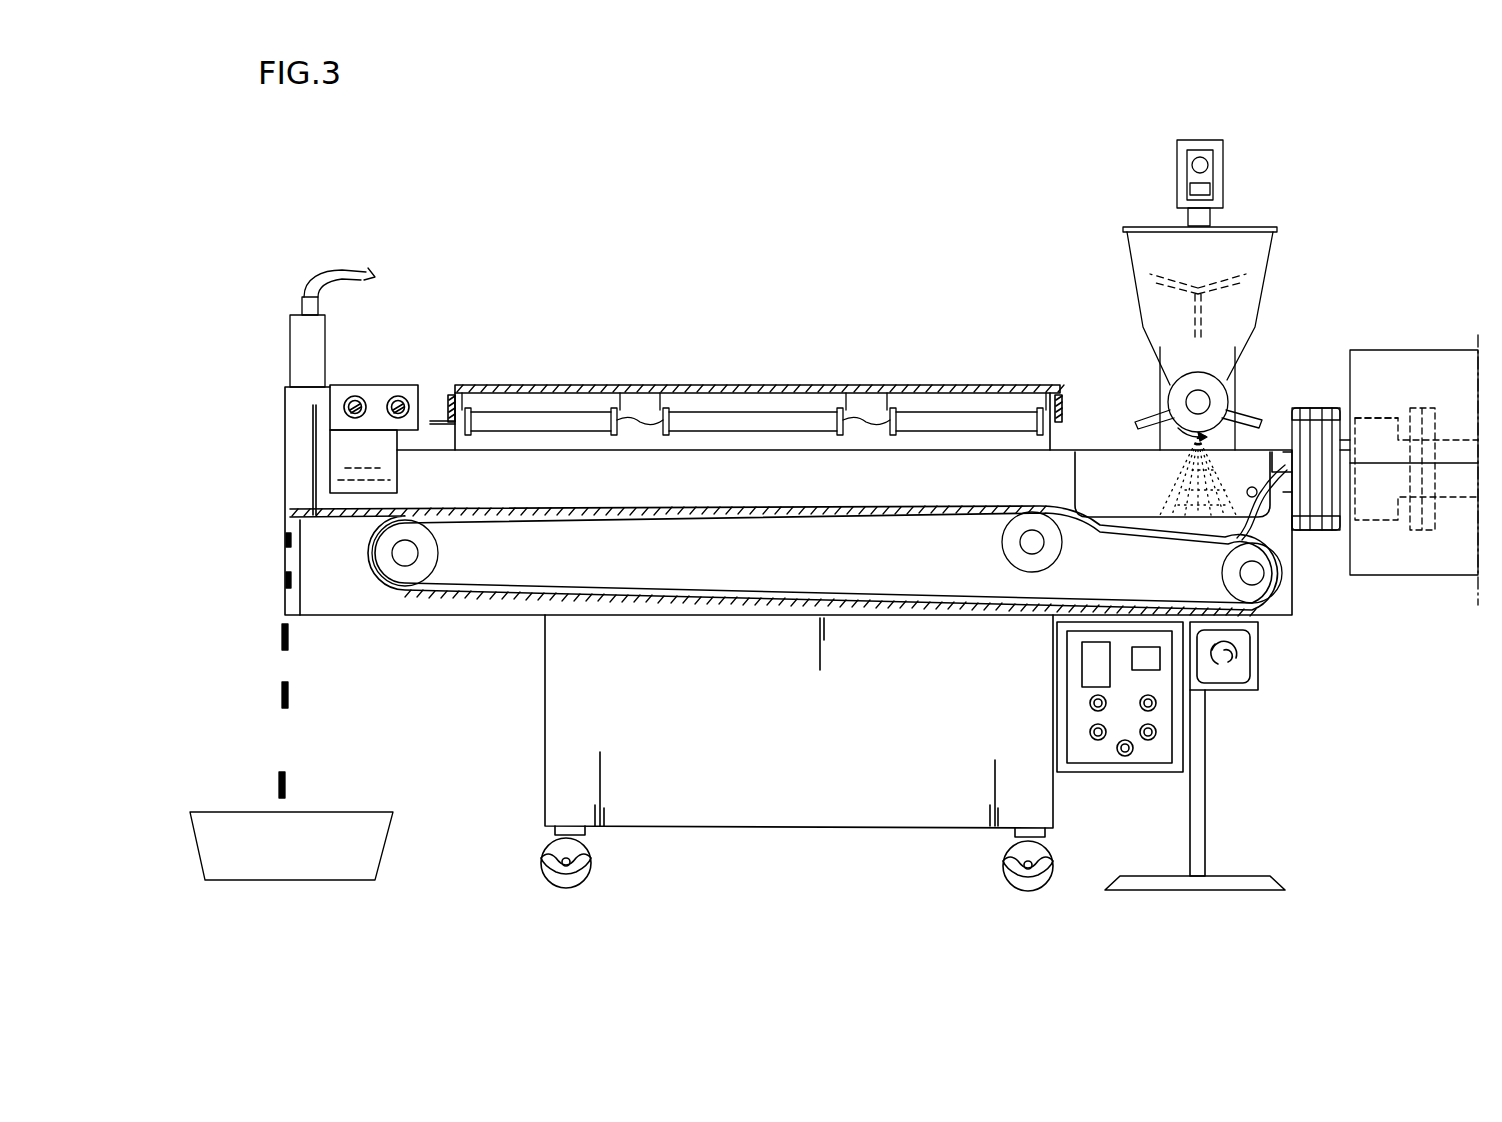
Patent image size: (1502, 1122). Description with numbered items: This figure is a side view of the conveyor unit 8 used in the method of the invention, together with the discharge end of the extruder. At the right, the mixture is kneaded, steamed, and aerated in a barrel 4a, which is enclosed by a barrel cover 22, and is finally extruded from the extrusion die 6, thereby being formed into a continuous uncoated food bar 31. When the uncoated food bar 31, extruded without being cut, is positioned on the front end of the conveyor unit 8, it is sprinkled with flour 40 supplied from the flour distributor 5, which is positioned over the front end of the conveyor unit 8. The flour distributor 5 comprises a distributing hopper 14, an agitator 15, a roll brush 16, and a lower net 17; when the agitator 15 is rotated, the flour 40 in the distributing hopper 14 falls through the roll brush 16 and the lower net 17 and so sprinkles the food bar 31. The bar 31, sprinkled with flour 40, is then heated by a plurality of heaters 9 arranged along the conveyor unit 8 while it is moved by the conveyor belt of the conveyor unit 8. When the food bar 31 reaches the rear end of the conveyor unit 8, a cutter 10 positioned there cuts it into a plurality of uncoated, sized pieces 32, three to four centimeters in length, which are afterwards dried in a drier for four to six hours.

The barrel 4a is at (1383, 520).
The flour distributor 5 is at (1240, 202).
The extrusion die 6 is at (1283, 455).
The conveyor unit 8 is at (728, 376).
The heater 9 is at (565, 418).
The cutter 10 is at (312, 430).
The distributing hopper 14 is at (1262, 226).
The agitator 15 is at (1246, 270).
The roll brush 16 is at (1215, 398).
The lower net 17 is at (1145, 418).
The barrel cover 22 is at (1405, 350).
The uncoated food bar 31 is at (1267, 502).
The sized pieces 32 is at (292, 692).
The flour 40 is at (1168, 490).